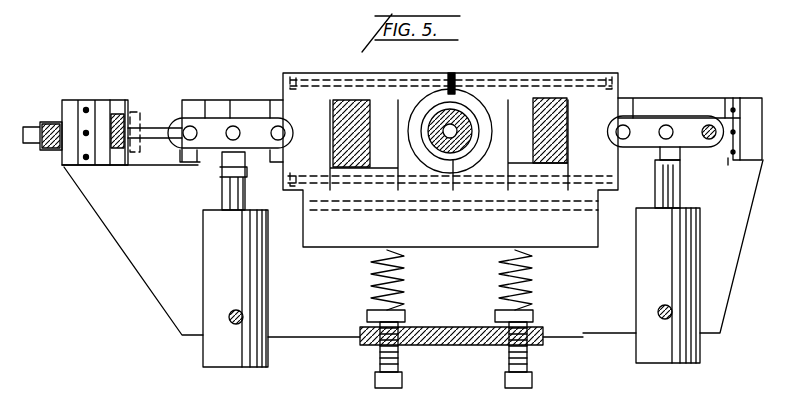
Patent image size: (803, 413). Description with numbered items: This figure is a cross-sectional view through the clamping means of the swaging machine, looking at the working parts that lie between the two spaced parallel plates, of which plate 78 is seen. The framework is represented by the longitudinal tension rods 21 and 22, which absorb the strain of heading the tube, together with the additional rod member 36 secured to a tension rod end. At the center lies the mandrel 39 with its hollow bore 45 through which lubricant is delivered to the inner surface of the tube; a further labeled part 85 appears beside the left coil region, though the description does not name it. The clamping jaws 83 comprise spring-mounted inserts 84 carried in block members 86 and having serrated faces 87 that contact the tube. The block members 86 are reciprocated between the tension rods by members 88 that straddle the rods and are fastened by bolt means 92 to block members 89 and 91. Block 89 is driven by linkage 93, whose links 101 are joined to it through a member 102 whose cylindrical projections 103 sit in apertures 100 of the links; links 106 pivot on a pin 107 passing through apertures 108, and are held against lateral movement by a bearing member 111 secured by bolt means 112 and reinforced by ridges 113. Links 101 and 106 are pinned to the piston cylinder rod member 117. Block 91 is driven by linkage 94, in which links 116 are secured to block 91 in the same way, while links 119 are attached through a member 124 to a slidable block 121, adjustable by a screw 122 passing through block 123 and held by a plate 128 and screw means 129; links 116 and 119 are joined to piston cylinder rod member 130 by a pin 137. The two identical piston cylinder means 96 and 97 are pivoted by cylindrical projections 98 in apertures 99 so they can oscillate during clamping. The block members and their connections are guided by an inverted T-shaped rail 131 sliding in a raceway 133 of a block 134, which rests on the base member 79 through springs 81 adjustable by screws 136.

The longitudinal tension rod 21 is at (340, 100).
The longitudinal tension rod 22 is at (566, 112).
The additional rod member 36 is at (455, 108).
The mandrel 39 is at (455, 145).
The hollow bore 45 is at (440, 150).
The parallel plate 78 is at (742, 246).
The base member 79 is at (438, 340).
The spring 81 is at (498, 285).
The clamping jaws 83 is at (494, 102).
The spring-mounted insert 84 is at (490, 86).
The rod 85 is at (380, 168).
The block member 86 is at (548, 96).
The serrated face 87 is at (452, 100).
The straddling member 88 is at (338, 78).
The block member 89 is at (636, 98).
The block member 91 is at (280, 88).
The bolt means 92 is at (304, 78).
The linkage 93 is at (701, 112).
The linkage 94 is at (219, 110).
The piston cylinder means 96 is at (648, 365).
The piston cylinder means 97 is at (240, 365).
The cylindrical projection 98 is at (672, 312).
The aperture 99 is at (656, 313).
The aperture 100 is at (614, 124).
The link 101 is at (640, 116).
The member 102 is at (596, 212).
The cylindrical projection 103 is at (616, 140).
The link 106 is at (706, 126).
The pin 107 is at (746, 90).
The aperture 108 is at (700, 150).
The bearing member 111 is at (752, 120).
The bolt means 112 is at (758, 106).
The ridge 113 is at (668, 125).
The link 116 is at (262, 150).
The piston cylinder rod member 117 is at (682, 186).
The link 119 is at (204, 122).
The slidable block 121 is at (147, 112).
The screw 122 is at (50, 120).
The block 123 is at (72, 100).
The member 124 is at (192, 160).
The plate 128 is at (132, 155).
The screw means 129 is at (120, 167).
The piston cylinder rod member 130 is at (230, 172).
The inverted T-shaped rail 131 is at (305, 198).
The raceway 133 is at (322, 208).
The block 134 is at (303, 246).
The screw 136 is at (503, 380).
The pin 137 is at (233, 124).